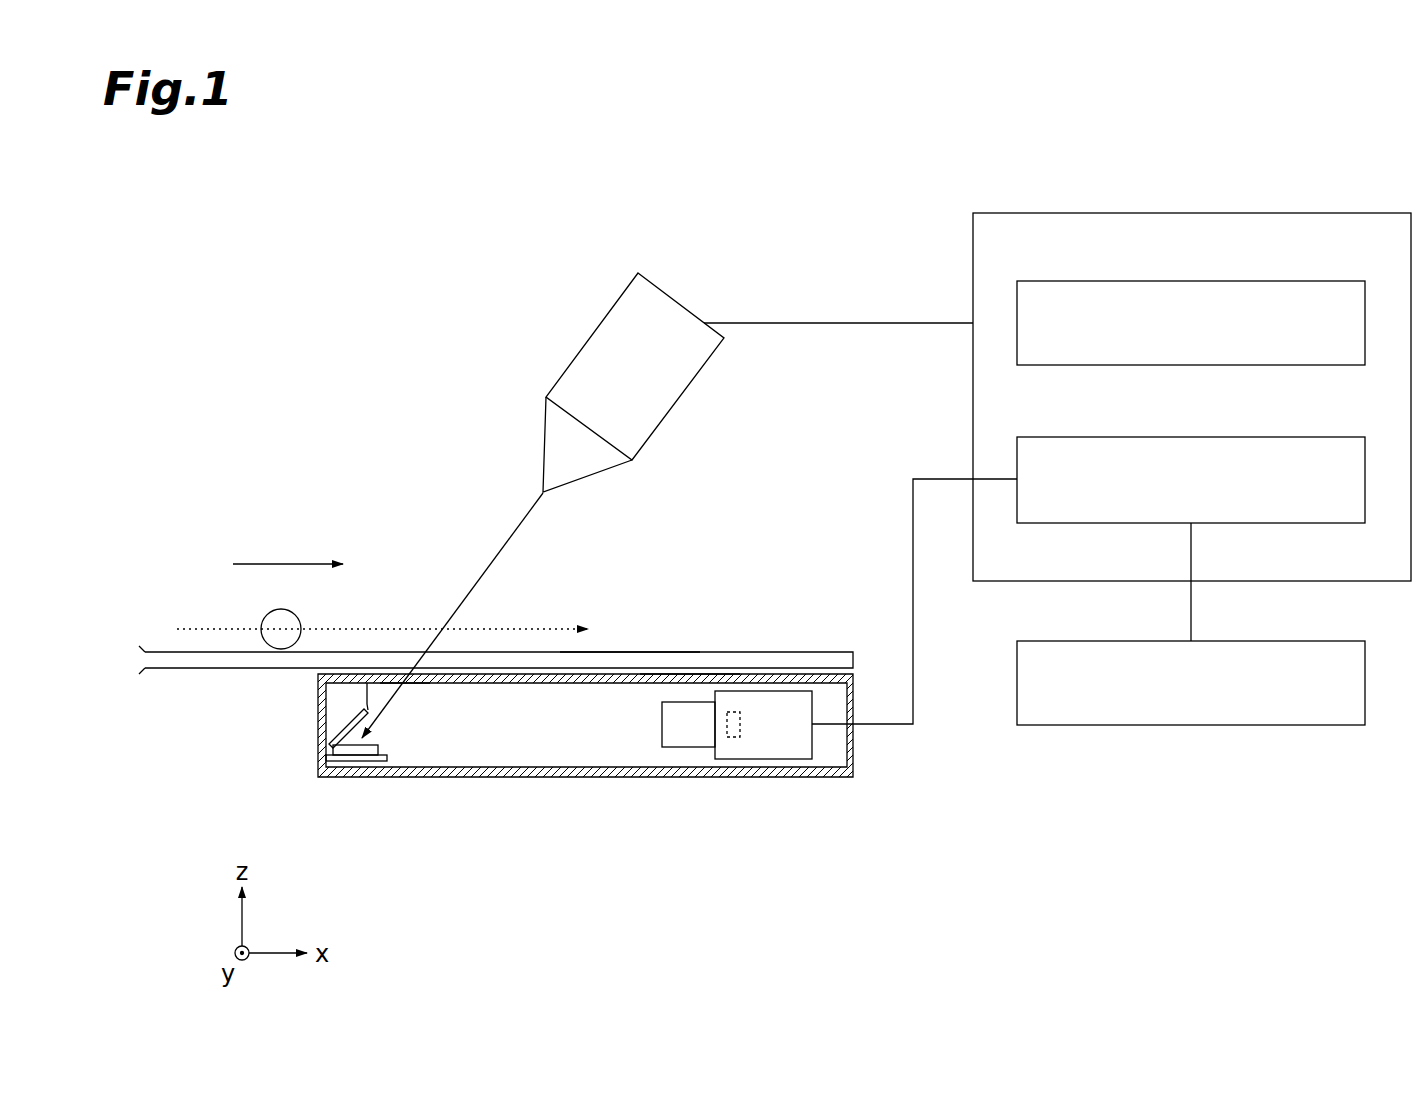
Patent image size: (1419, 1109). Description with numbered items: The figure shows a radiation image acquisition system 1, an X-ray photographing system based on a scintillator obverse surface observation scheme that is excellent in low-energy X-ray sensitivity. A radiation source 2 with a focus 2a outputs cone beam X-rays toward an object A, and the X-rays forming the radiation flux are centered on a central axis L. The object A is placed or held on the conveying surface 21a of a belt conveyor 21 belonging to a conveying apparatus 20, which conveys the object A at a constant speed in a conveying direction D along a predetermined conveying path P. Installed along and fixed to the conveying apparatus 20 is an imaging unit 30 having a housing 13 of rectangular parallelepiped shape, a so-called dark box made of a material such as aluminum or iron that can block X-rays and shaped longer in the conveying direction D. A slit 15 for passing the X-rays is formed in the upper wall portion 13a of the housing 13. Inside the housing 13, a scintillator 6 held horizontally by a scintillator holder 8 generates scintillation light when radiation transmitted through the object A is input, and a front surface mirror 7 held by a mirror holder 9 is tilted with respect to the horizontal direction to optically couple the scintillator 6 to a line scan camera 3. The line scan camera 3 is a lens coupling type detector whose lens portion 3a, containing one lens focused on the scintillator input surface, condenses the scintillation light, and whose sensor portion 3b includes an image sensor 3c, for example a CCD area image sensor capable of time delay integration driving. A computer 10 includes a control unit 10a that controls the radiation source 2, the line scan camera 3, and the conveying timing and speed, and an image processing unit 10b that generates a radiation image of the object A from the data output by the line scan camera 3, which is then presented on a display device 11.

The radiation image acquisition system 1 is at (363, 220).
The radiation source 2 is at (758, 384).
The focus 2a is at (548, 497).
The line scan camera 3 is at (783, 710).
The lens portion 3a is at (682, 735).
The sensor portion 3b is at (771, 735).
The image sensor 3c is at (743, 728).
The scintillator 6 is at (385, 748).
The front surface mirror 7 is at (340, 723).
The scintillator holder 8 is at (365, 762).
The mirror holder 9 is at (335, 695).
The computer 10 is at (1192, 371).
The control unit 10a is at (1322, 281).
The image processing unit 10b is at (1322, 437).
The display device 11 is at (1365, 677).
The housing 13 is at (585, 736).
The upper wall portion 13a is at (688, 673).
The slit 15 is at (408, 685).
The conveying apparatus 20 is at (479, 635).
The belt conveyor 21 is at (224, 670).
The conveying surface 21a is at (625, 650).
The imaging unit 30 is at (637, 685).
The object A is at (265, 617).
The conveying direction D is at (284, 562).
The central axis L is at (483, 568).
The conveying path P is at (383, 626).